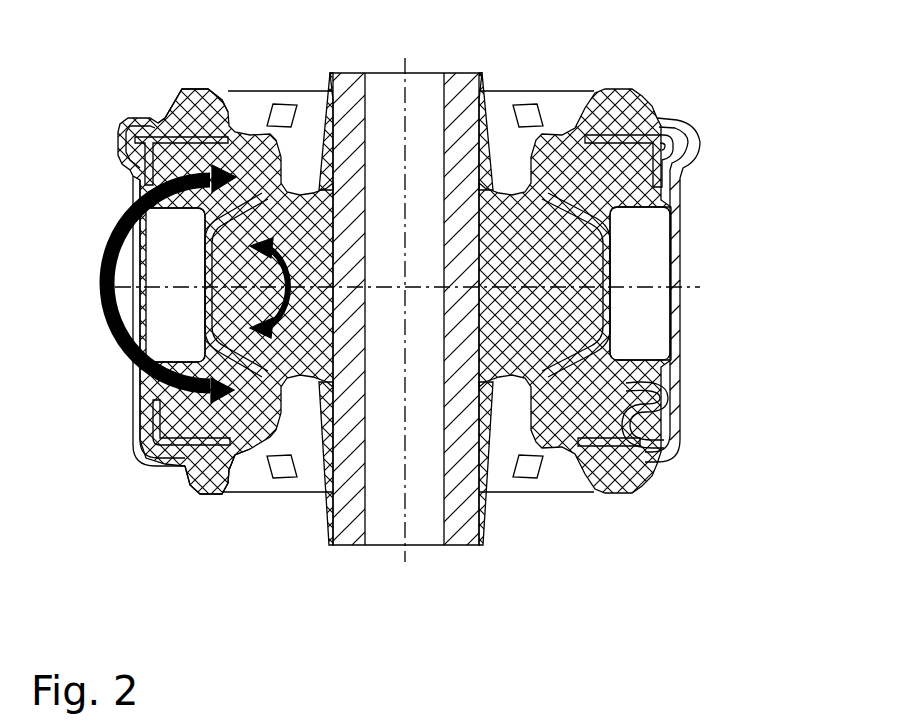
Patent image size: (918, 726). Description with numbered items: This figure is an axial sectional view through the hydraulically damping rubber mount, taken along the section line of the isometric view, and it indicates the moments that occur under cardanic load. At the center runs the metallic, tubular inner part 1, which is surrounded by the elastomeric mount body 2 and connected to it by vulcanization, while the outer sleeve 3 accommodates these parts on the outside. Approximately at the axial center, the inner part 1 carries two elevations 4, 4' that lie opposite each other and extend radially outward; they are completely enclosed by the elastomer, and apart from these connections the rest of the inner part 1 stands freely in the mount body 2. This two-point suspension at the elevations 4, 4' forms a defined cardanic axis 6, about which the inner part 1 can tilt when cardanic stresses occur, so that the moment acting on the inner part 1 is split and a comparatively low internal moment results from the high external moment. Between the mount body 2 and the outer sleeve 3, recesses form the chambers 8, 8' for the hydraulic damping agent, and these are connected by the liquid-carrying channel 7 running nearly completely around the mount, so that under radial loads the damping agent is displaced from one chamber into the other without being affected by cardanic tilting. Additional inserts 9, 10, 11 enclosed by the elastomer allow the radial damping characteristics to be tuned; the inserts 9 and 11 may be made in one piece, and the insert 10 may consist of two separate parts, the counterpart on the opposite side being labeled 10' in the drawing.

The inner part 1 is at (457, 84).
The mount body 2 is at (198, 100).
The outer sleeve 3 is at (673, 262).
The elevation 4 is at (631, 291).
The elevation 4' is at (198, 291).
The cardanic axis 6 is at (162, 293).
The channel 7 is at (663, 398).
The chamber 8 is at (696, 283).
The chamber 8' is at (133, 285).
The insert 9 is at (633, 139).
The insert 10 is at (670, 253).
The intermediate plate 10' is at (164, 375).
The insert 11 is at (628, 440).